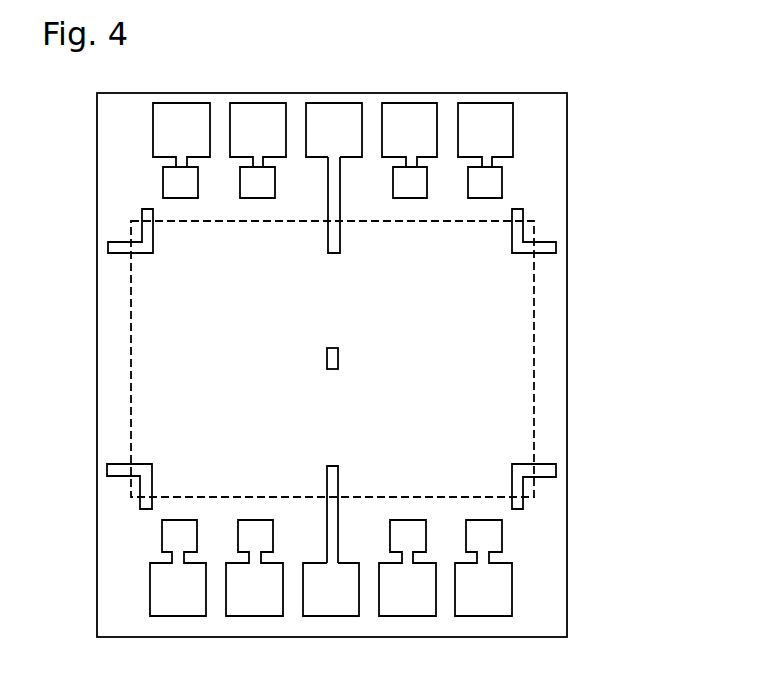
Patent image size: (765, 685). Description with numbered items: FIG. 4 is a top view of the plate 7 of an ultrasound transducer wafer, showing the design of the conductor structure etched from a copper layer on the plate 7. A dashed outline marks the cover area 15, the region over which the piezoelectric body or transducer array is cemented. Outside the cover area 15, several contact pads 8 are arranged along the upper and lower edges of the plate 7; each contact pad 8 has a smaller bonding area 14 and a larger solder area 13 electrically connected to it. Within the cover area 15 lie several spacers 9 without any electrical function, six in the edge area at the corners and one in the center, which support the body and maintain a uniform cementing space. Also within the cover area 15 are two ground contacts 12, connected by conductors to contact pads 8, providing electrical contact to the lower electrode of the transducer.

The plate 7 is at (555, 552).
The contact pads 8 is at (428, 147).
The spacers 9 is at (153, 232).
The ground contacts 12 is at (340, 242).
The large contact pad portion 13 is at (503, 136).
The small contact pad portion 14 is at (492, 188).
The cover area 15 is at (535, 379).